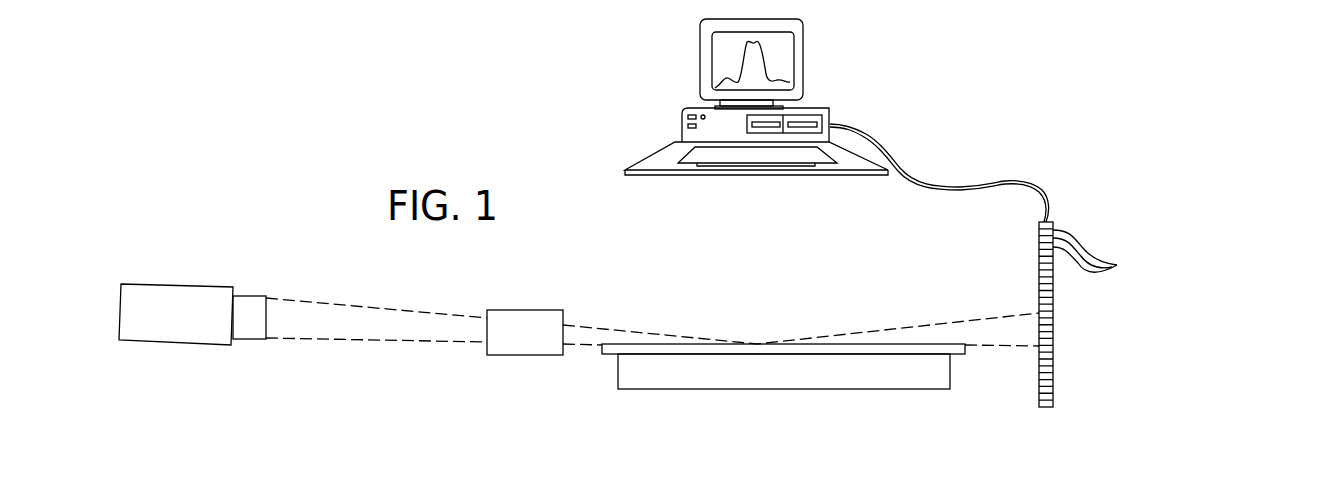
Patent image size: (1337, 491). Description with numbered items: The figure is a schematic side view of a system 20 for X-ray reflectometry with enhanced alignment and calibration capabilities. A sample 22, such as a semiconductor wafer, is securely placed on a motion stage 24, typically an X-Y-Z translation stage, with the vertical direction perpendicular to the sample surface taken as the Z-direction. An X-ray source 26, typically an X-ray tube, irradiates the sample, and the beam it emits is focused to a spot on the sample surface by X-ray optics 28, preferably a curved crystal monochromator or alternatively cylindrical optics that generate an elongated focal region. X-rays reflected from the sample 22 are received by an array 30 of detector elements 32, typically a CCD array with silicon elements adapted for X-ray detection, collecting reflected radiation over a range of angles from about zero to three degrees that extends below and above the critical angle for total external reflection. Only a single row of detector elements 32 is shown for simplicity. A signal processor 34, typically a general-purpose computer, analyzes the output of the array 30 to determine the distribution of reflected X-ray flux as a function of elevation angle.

The system for X-ray reflectometry 20 is at (222, 213).
The sample 22 is at (961, 356).
The motion stage 24 is at (637, 371).
The X-ray source 26 is at (182, 284).
The X-ray optics 28 is at (513, 310).
The array 30 is at (1123, 308).
The detector elements 32 is at (1099, 253).
The signal processor 34 is at (688, 126).